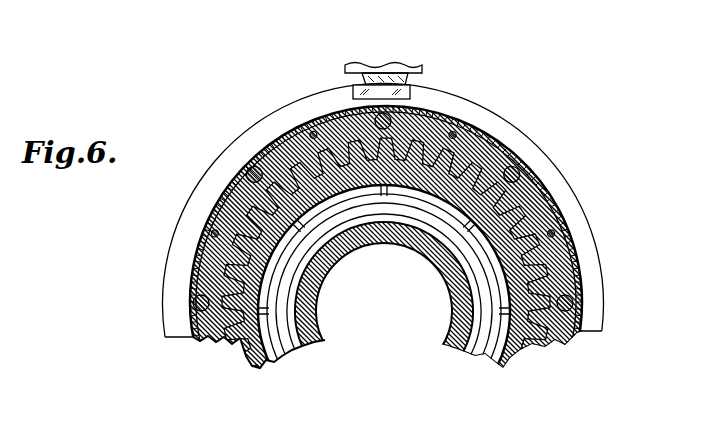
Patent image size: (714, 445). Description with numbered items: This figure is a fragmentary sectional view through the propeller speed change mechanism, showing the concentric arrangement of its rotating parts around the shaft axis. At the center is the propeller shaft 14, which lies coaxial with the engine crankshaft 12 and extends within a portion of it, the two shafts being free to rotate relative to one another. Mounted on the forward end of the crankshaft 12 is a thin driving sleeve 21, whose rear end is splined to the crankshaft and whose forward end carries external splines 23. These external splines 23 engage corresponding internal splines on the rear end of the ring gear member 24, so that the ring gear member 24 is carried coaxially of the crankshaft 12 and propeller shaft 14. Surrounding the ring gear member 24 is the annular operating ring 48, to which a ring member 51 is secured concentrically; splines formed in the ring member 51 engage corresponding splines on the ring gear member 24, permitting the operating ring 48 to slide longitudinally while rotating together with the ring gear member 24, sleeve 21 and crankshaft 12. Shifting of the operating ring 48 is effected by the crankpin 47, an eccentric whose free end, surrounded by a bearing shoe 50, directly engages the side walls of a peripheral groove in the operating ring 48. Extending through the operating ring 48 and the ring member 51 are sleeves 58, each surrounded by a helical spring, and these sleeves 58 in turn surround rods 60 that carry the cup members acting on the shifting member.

The crankshaft 12 is at (462, 252).
The propeller shaft 14 is at (316, 311).
The sleeve 21 is at (263, 277).
The external splines 23 is at (255, 370).
The ring gear member 24 is at (223, 338).
The crankpin 47 is at (385, 78).
The operating ring 48 is at (462, 116).
The shoe 50 is at (400, 92).
The ring member 51 is at (487, 153).
The sleeves 58 is at (540, 185).
The rods 60 is at (522, 170).